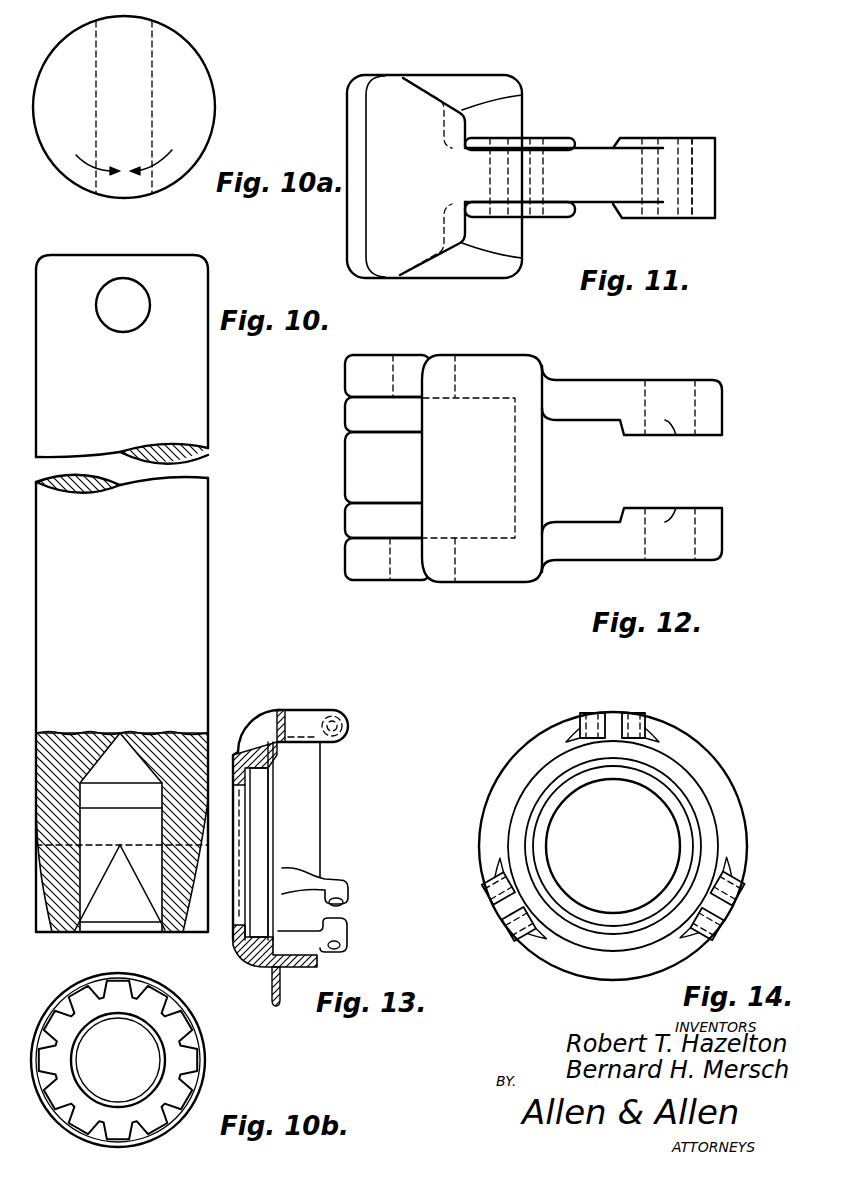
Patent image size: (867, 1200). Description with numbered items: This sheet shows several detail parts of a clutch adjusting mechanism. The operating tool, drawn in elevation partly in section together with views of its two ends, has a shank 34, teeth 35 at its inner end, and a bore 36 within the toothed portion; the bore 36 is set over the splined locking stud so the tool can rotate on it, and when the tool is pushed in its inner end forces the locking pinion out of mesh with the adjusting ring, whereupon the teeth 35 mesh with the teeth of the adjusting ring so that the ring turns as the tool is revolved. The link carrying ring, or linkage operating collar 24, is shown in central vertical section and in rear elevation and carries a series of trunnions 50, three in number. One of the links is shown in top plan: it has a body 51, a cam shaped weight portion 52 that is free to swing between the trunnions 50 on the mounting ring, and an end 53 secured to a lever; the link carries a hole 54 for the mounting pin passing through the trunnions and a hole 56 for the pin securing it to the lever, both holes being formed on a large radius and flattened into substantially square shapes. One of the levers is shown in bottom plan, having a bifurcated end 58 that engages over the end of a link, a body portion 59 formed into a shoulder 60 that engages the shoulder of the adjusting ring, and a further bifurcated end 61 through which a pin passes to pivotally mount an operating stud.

In FIG. 13, the linkage operating collar 24 is at (262, 750).
In FIG. 14, the linkage operating collar 24 is at (703, 787).
In FIG. 10A, the shank 34 is at (195, 78).
In FIG. 10, the shank 34 is at (208, 565).
In FIG. 10, the teeth 35 is at (200, 895).
In FIG. 10B, the teeth 35 is at (190, 1058).
In FIG. 10, the bore 36 is at (123, 882).
In FIG. 10B, the bore 36 is at (118, 1060).
In FIG. 13, the trunnions 50 is at (347, 880).
In FIG. 14, the trunnions 50 is at (643, 713).
In FIG. 11, the link body 51 is at (572, 168).
In FIG. 11, the cam shaped weight portion 52 is at (472, 93).
In FIG. 11, the link end 53 is at (707, 150).
In FIG. 11, the hole 54 is at (543, 218).
In FIG. 11, the hole 56 is at (708, 218).
In FIG. 12, the bifurcated end 58 is at (628, 390).
In FIG. 12, the body portion 59 is at (522, 582).
In FIG. 12, the shoulder 60 is at (525, 378).
In FIG. 12, the bifurcated end 61 is at (370, 580).